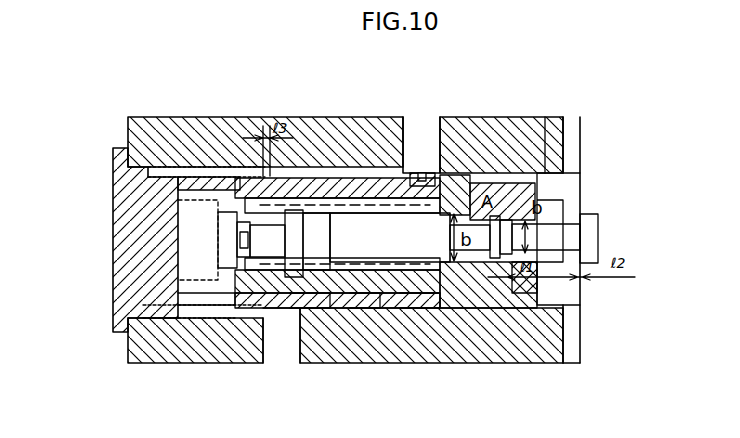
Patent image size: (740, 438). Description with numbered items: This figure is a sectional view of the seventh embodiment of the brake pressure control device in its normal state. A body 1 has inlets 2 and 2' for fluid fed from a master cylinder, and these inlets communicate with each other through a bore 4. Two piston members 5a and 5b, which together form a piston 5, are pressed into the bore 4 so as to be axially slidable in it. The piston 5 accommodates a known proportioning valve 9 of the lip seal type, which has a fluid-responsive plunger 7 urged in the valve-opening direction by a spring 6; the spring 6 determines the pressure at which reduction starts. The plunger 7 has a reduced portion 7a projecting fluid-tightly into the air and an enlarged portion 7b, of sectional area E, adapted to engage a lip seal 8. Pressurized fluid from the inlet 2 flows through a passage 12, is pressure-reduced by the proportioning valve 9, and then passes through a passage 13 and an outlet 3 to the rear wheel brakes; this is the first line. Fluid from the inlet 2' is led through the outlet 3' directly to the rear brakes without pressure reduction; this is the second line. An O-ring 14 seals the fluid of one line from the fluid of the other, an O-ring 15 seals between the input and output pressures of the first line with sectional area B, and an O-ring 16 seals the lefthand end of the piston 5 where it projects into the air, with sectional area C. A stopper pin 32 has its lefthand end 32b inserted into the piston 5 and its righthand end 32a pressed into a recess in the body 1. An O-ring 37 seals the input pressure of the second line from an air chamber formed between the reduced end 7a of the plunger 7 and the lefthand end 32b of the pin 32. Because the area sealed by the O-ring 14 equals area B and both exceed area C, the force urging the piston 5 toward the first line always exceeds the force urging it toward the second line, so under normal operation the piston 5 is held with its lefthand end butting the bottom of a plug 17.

The body 1 is at (480, 333).
The inlet 2 is at (421, 120).
The inlet 2' is at (592, 215).
The outlet 3 is at (281, 359).
The outlet 3' is at (586, 380).
The bore 4 is at (546, 172).
The piston 5 is at (395, 178).
The piston member 5a is at (348, 175).
The piston member 5b is at (457, 178).
The spring 6 is at (332, 310).
The plunger 7 is at (398, 307).
The reduced portion 7a is at (422, 303).
The enlarged portion 7b is at (234, 172).
The lip seal 8 is at (300, 172).
The proportioning valve 9 is at (318, 176).
The passage 12 is at (425, 178).
The passage 13 is at (200, 320).
The O-ring 14 is at (482, 185).
The O-ring 15 is at (372, 310).
The O-ring 16 is at (192, 168).
The plug 17 is at (122, 222).
The stopper pin 32 is at (572, 228).
The righthand end 32a is at (590, 237).
The lefthand end 32b is at (508, 307).
The O-ring 37 is at (567, 230).
The sectional area B is at (407, 241).
The sectional area C is at (198, 240).
The sectional area E is at (243, 240).